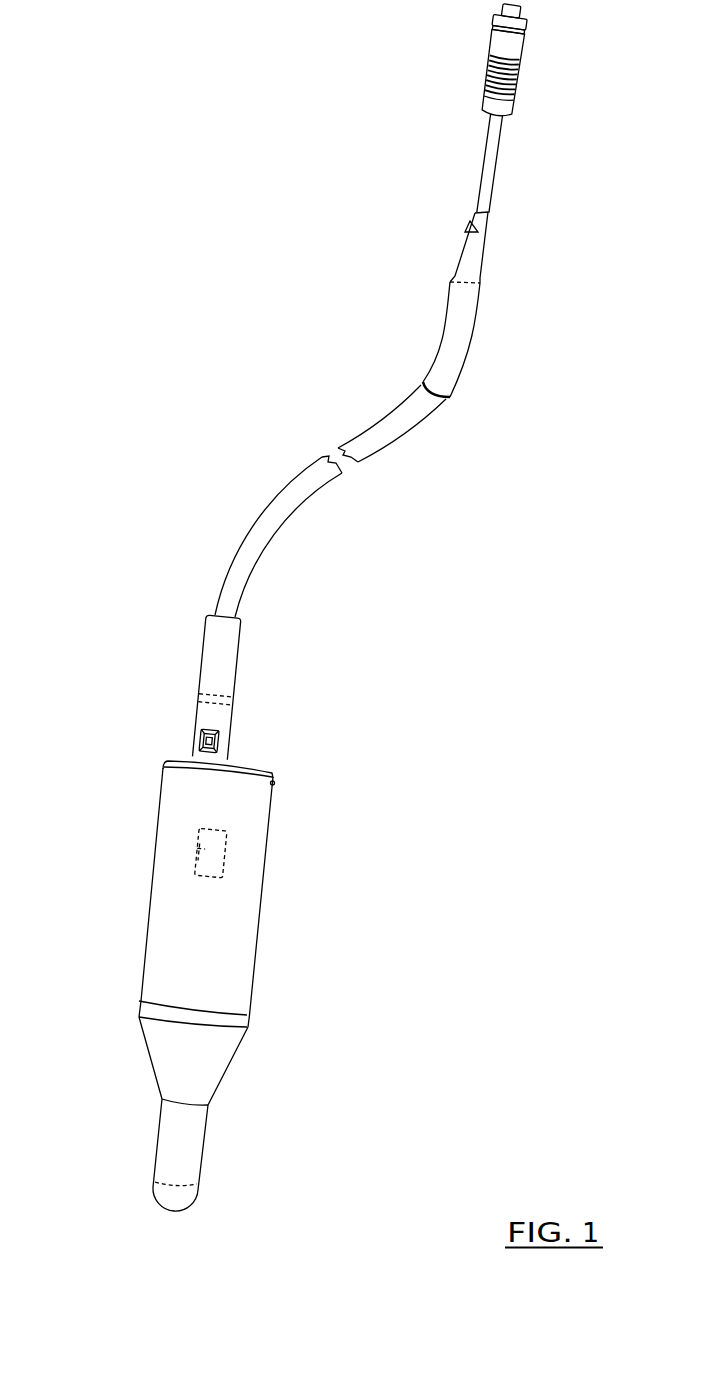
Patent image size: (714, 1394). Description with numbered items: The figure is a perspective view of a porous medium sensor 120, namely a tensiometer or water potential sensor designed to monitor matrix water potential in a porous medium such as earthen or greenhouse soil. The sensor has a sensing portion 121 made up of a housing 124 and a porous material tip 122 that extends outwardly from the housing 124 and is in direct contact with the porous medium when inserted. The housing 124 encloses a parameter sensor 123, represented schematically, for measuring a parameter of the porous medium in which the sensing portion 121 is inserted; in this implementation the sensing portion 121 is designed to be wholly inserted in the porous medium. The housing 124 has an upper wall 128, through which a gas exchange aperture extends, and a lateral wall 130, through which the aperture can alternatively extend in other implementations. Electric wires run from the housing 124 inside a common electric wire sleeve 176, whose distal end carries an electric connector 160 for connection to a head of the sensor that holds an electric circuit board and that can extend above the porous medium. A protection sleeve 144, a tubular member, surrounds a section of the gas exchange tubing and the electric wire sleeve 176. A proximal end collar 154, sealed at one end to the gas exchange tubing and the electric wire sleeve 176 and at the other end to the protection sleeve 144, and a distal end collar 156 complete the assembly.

The porous medium sensor 120 is at (476, 718).
The sensing portion 121 is at (299, 912).
The porous material tip 122 is at (188, 1153).
The parameter sensor 123 is at (205, 853).
The housing 124 is at (260, 847).
The upper wall 128 is at (258, 765).
The lateral wall 130 is at (237, 983).
The protection sleeve 144 is at (380, 452).
The proximal end collar 154 is at (240, 660).
The distal end collar 156 is at (478, 312).
The electric connector 160 is at (523, 51).
The electric wire sleeve 176 is at (490, 163).